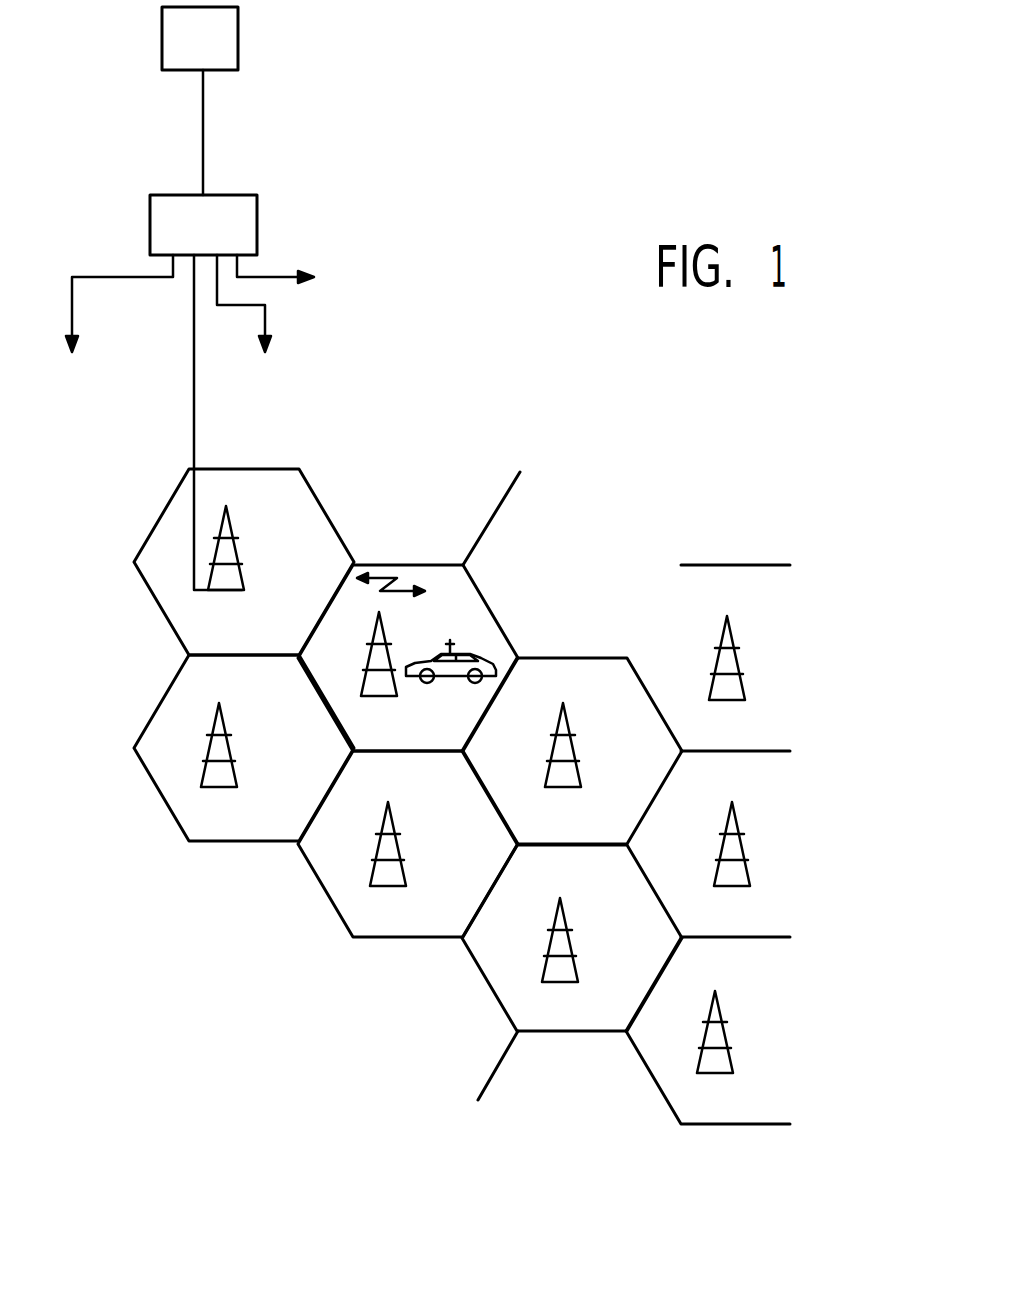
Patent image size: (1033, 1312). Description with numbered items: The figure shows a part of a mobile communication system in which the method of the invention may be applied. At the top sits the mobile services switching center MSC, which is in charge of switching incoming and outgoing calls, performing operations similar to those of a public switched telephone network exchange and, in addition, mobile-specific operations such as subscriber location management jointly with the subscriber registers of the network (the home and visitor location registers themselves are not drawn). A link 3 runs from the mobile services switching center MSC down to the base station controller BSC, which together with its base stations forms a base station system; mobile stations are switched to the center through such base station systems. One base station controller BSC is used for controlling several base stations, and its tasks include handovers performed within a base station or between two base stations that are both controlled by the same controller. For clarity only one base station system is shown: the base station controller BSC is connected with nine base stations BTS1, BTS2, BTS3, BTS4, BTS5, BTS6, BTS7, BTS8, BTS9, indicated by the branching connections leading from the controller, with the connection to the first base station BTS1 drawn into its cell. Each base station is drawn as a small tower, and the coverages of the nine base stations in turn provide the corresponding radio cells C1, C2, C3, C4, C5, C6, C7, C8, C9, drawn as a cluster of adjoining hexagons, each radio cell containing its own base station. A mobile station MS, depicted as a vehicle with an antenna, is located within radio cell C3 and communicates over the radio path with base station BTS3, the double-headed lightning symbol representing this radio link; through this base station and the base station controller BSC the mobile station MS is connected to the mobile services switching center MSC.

The mobile services switching center MSC is at (200, 38).
The base station controller BSC is at (262, 392).
The connection between MSC and BSC 3 is at (203, 137).
The base station BTS1 is at (239, 577).
The base station BTS2 is at (156, 597).
The base station BTS3 is at (405, 679).
The base station BTS4 is at (342, 646).
The base station BTS5 is at (577, 771).
The base station BTS6 is at (573, 966).
The base station BTS7 is at (743, 681).
The base station BTS8 is at (741, 870).
The base station BTS9 is at (730, 1061).
The radio cell C1 is at (160, 606).
The radio cell C2 is at (165, 800).
The radio cell C3 is at (413, 565).
The radio cell C4 is at (335, 906).
The radio cell C5 is at (583, 658).
The radio cell C6 is at (584, 1031).
The radio cell C7 is at (730, 751).
The radio cell C8 is at (732, 937).
The radio cell C9 is at (732, 1124).
The mobile station MS is at (426, 628).